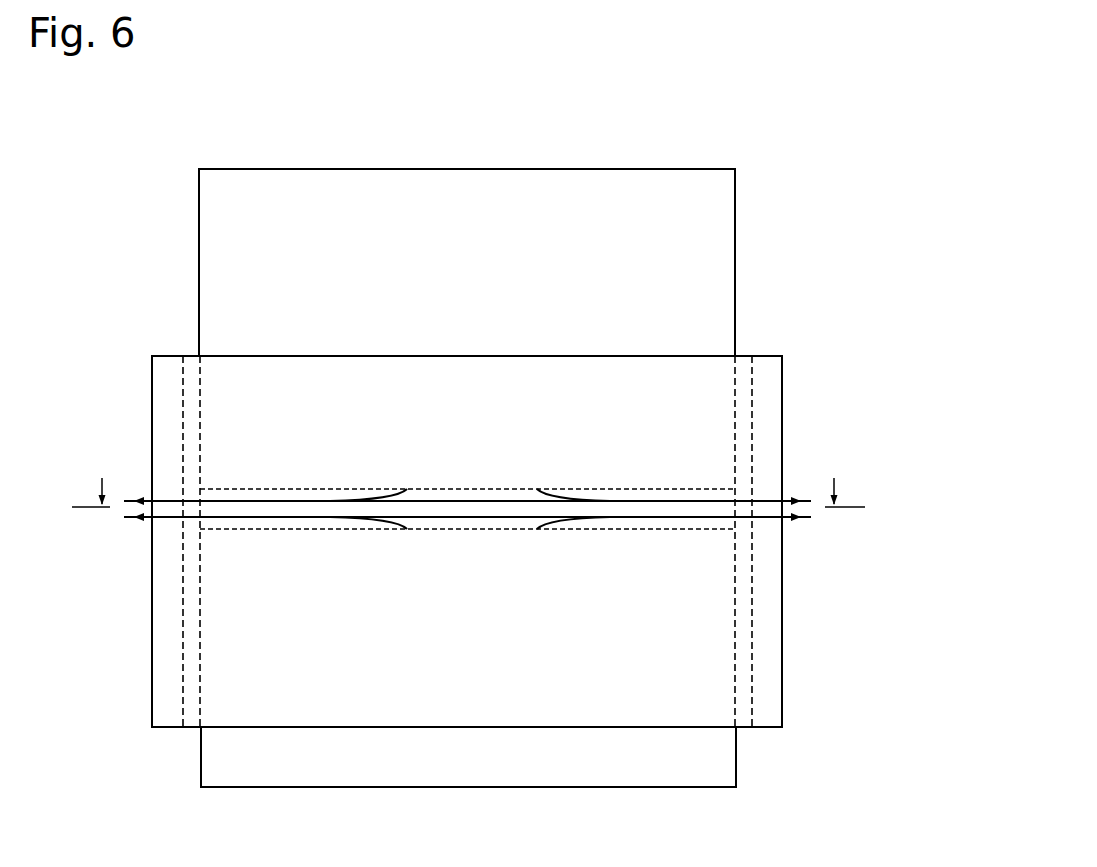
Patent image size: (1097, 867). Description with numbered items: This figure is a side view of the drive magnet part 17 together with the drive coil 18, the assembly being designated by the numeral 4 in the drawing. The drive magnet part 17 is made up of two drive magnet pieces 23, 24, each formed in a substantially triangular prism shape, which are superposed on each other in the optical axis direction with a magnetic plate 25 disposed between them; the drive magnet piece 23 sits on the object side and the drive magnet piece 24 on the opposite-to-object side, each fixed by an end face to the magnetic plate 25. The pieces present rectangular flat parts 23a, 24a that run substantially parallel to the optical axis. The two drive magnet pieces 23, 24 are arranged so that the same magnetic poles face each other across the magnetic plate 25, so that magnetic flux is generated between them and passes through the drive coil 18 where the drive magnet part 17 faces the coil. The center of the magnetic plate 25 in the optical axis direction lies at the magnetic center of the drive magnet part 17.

The magnetic circuit 4 is at (751, 112).
The drive magnet part 17 is at (513, 262).
The drive magnet piece 23 is at (513, 262).
The flat part 23a is at (297, 274).
The drive coil 18 is at (784, 383).
The drive magnet piece 24 is at (501, 757).
The flat part 24a is at (303, 771).
The magnetic plate 25 is at (307, 488).